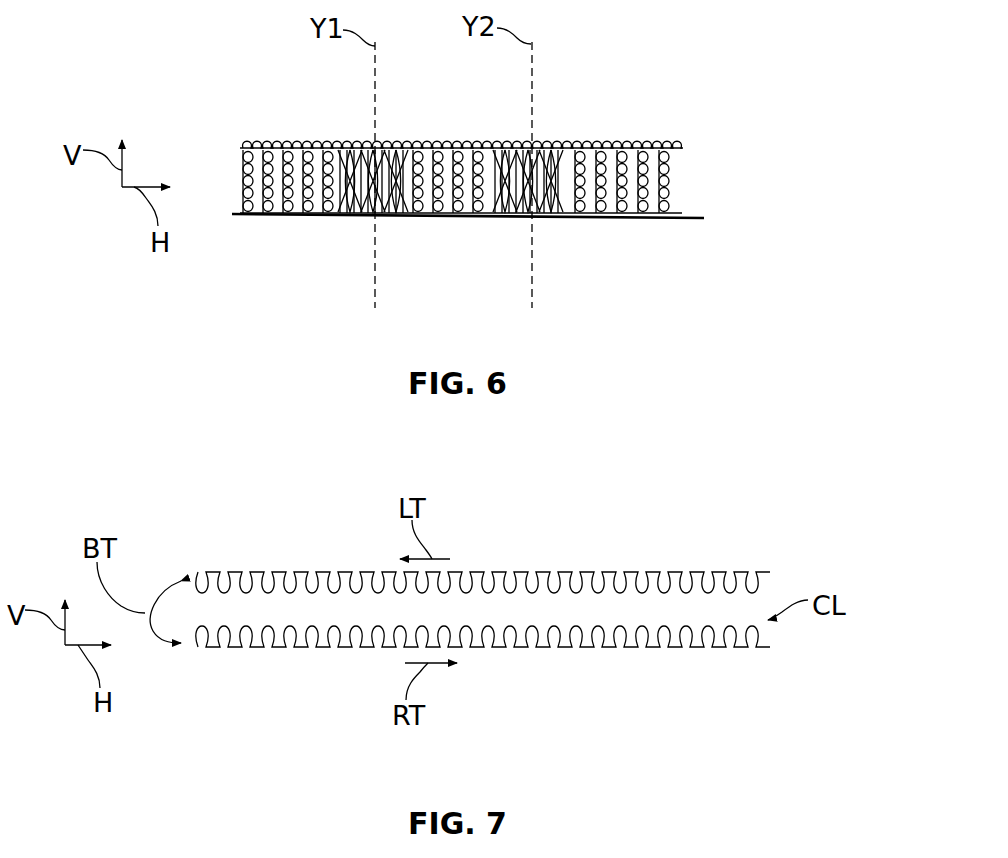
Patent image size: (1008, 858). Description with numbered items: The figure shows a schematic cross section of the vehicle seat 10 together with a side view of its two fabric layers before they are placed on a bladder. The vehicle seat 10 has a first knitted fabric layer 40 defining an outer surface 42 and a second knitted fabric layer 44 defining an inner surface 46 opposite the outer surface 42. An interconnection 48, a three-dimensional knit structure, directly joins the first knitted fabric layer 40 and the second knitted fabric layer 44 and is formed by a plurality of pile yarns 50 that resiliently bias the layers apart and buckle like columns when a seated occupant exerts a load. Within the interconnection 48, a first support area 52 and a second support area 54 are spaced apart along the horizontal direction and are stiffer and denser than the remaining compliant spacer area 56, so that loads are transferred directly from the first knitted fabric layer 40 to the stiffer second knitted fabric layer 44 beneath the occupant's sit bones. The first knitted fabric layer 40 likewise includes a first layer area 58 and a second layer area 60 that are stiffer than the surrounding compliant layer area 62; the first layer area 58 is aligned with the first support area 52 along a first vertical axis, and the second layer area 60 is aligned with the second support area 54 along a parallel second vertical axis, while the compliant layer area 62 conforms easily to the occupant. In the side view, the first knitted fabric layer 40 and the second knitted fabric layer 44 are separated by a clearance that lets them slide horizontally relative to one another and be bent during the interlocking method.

In FIG. 6, the vehicle seat 10 is at (232, 165).
In FIG. 6, the first knitted fabric layer 40 is at (432, 148).
In FIG. 7, the first knitted fabric layer 40 is at (660, 572).
In FIG. 6, the outer surface 42 is at (305, 135).
In FIG. 6, the second knitted fabric layer 44 is at (249, 214).
In FIG. 7, the second knitted fabric layer 44 is at (660, 650).
In FIG. 6, the inner surface 46 is at (444, 219).
In FIG. 6, the interconnection 48 is at (672, 175).
In FIG. 6, the pile yarns 50 is at (281, 139).
In FIG. 6, the first support area 52 is at (367, 215).
In FIG. 6, the second support area 54 is at (524, 215).
In FIG. 6, the compliant spacer area 56 is at (468, 148).
In FIG. 6, the first layer area 58 is at (355, 148).
In FIG. 6, the second layer area 60 is at (532, 148).
In FIG. 6, the compliant layer area 62 is at (668, 146).